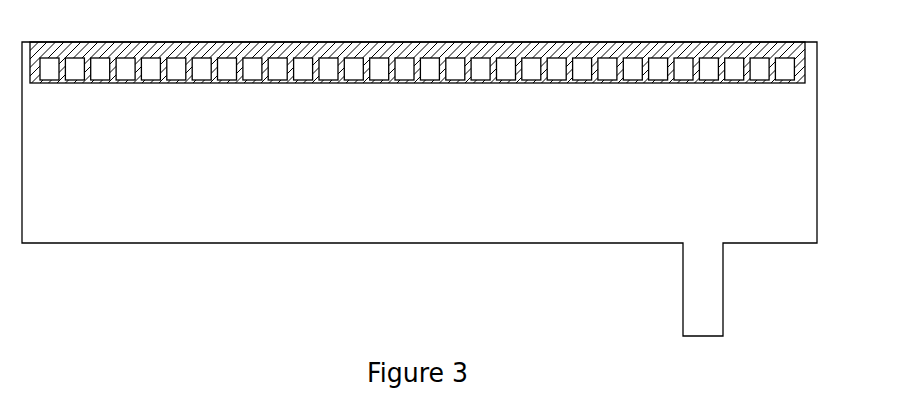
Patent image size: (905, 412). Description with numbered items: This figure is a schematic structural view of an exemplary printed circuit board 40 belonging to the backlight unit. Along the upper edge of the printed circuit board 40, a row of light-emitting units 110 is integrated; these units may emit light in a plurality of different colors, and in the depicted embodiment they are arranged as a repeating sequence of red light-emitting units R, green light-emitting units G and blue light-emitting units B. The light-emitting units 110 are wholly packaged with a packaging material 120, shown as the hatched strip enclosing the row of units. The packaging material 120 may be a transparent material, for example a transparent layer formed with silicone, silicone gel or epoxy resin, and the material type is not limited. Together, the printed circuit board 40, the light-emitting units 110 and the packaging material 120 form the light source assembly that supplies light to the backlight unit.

The printed circuit board 40 is at (281, 212).
The light-emitting units 110 is at (125, 58).
The packaging material 120 is at (228, 46).